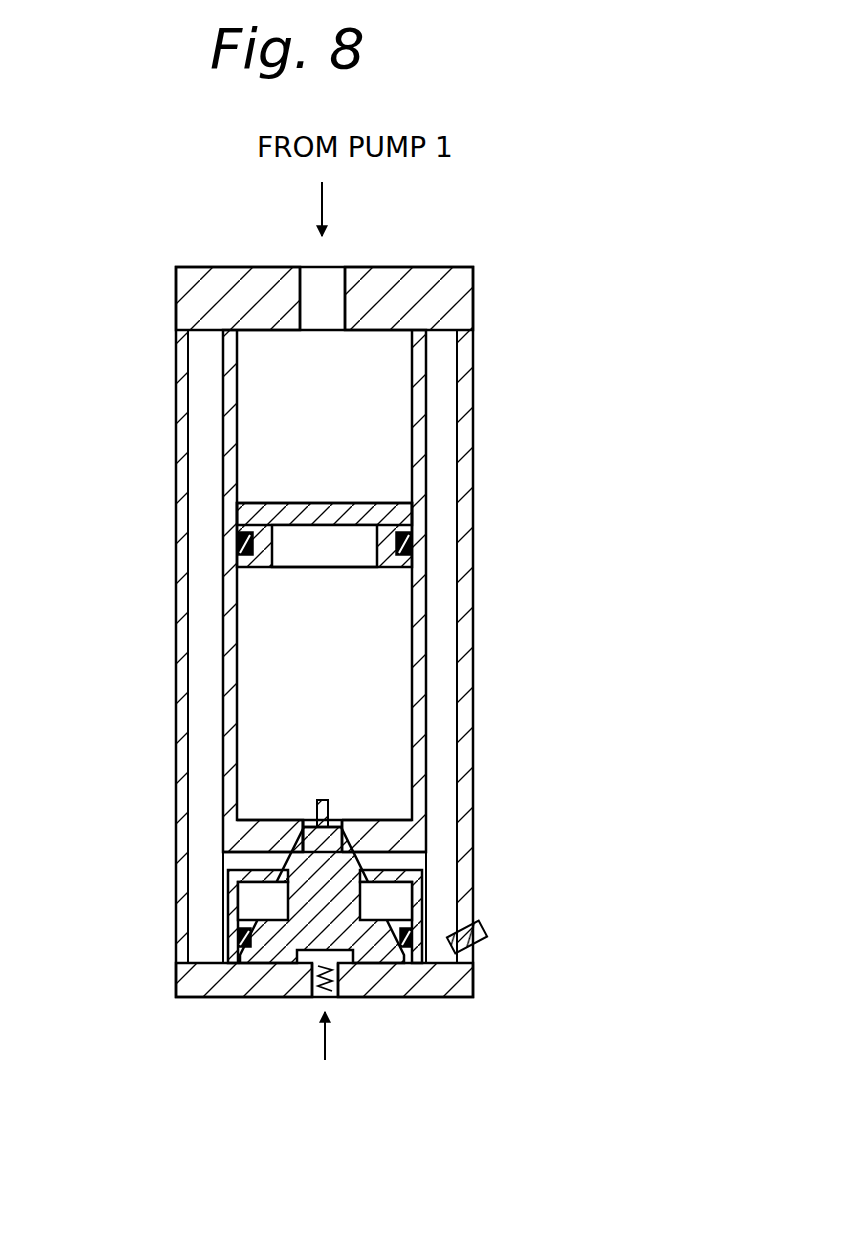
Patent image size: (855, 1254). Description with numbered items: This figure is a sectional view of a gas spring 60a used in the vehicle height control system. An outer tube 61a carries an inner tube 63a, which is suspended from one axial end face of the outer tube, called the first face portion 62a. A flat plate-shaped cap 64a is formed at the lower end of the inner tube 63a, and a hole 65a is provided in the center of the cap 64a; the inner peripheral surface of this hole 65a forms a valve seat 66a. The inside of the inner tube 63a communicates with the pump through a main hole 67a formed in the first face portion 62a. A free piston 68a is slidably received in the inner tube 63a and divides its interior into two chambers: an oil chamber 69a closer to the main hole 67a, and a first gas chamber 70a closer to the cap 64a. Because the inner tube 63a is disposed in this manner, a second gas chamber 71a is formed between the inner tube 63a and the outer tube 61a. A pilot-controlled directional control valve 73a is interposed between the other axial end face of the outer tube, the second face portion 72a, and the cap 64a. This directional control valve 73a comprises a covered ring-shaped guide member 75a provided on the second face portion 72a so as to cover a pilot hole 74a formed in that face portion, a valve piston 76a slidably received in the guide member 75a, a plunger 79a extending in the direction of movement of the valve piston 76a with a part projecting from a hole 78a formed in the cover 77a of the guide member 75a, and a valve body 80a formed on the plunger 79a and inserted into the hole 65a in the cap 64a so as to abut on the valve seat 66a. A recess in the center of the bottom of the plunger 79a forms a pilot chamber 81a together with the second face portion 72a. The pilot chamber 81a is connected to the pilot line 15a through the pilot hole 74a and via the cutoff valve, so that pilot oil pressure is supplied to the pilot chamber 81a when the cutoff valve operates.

The pilot line 15a is at (332, 1060).
The pressure control valve 60a is at (507, 240).
The outer tube 61a is at (463, 590).
The first face portion 62a is at (400, 285).
The inner tube 63a is at (427, 672).
The cap 64a is at (387, 830).
The hole 65a is at (316, 805).
The valve seat 66a is at (310, 838).
The main hole 67a is at (313, 290).
The free piston 68a is at (400, 512).
The oil chamber 69a is at (258, 412).
The first gas chamber 70a is at (258, 617).
The second gas chamber 71a is at (197, 697).
The second face portion 72a is at (218, 985).
The pilot-controlled directional control valve 73a is at (212, 888).
The pilot hole 74a is at (340, 987).
The guide member 75a is at (227, 910).
The valve piston 76a is at (265, 940).
The cover 77a is at (384, 872).
The hole 78a is at (372, 905).
The plunger 79a is at (290, 870).
The valve body 80a is at (330, 812).
The pilot chamber 81a is at (300, 975).